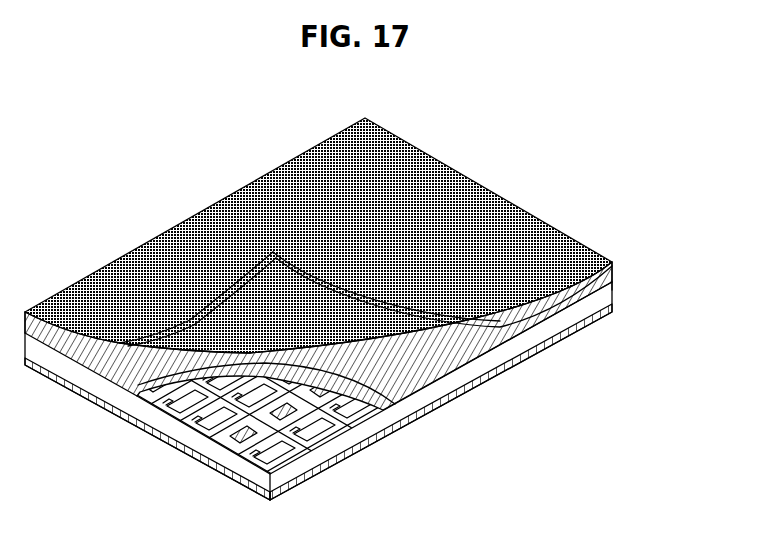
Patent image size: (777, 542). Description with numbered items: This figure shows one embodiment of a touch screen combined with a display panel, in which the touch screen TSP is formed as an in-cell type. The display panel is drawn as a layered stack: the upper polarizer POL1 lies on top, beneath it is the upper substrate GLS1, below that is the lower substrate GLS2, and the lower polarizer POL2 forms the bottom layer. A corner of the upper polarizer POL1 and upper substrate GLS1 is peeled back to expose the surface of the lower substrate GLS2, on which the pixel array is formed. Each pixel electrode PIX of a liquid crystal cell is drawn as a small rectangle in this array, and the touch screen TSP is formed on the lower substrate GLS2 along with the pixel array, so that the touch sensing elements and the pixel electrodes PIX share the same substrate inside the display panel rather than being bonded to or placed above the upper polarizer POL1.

The upper polarizer POL1 is at (613, 263).
The upper substrate GLS1 is at (614, 275).
The lower substrate GLS2 is at (606, 293).
The lower polarizer POL2 is at (613, 312).
The touch screen TSP is at (248, 438).
The pixel electrode PIX is at (292, 357).